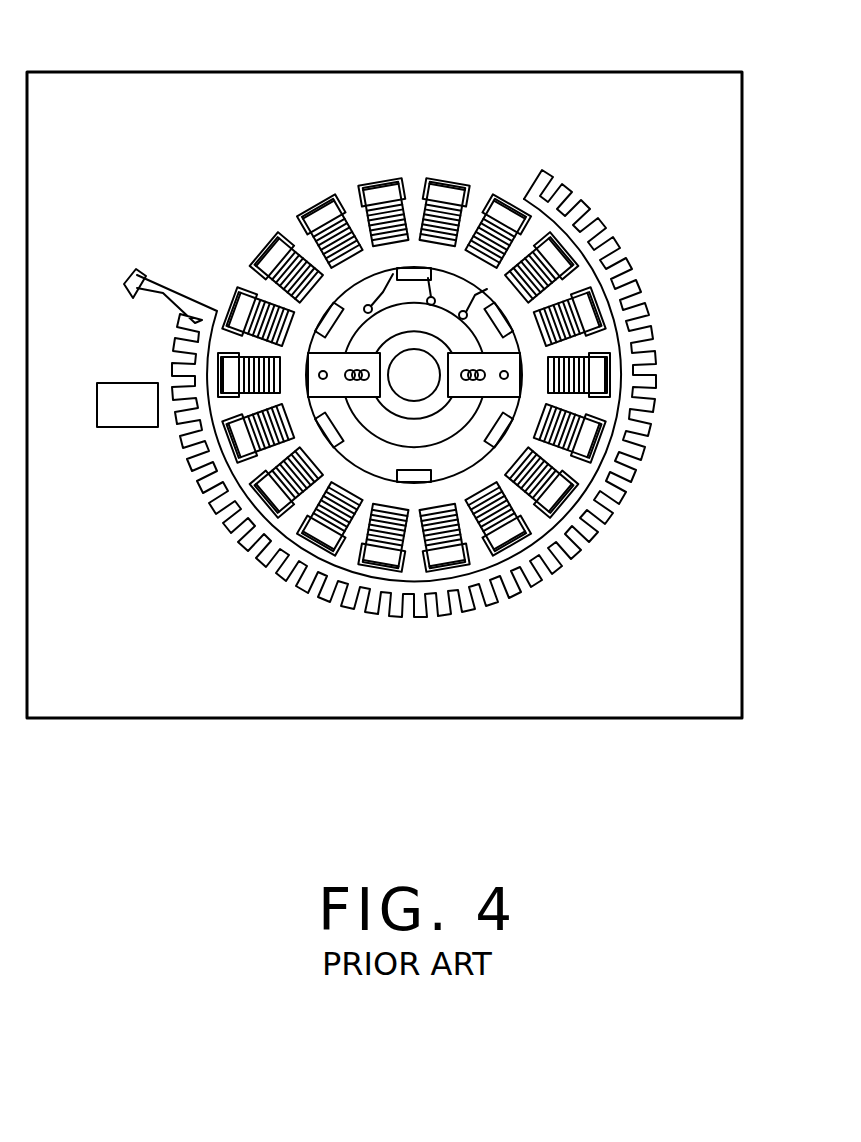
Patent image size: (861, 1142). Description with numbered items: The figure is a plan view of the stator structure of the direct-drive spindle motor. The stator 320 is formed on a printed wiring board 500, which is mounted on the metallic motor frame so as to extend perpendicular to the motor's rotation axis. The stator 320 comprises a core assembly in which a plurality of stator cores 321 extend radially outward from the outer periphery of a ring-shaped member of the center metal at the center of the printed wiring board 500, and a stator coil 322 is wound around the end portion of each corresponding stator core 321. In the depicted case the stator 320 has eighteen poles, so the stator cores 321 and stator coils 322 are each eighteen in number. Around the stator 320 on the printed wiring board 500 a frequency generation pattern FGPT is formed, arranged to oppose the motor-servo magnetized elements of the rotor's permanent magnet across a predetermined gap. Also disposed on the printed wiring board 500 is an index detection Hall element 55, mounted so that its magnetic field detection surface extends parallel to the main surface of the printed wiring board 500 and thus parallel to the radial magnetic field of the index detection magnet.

The stator 320 is at (412, 257).
The stator core 321 is at (386, 556).
The stator coil 322 is at (245, 416).
The index detection Hall element 55 is at (125, 382).
The printed wiring board 500 is at (717, 515).
The frequency generation pattern FGPT is at (583, 550).